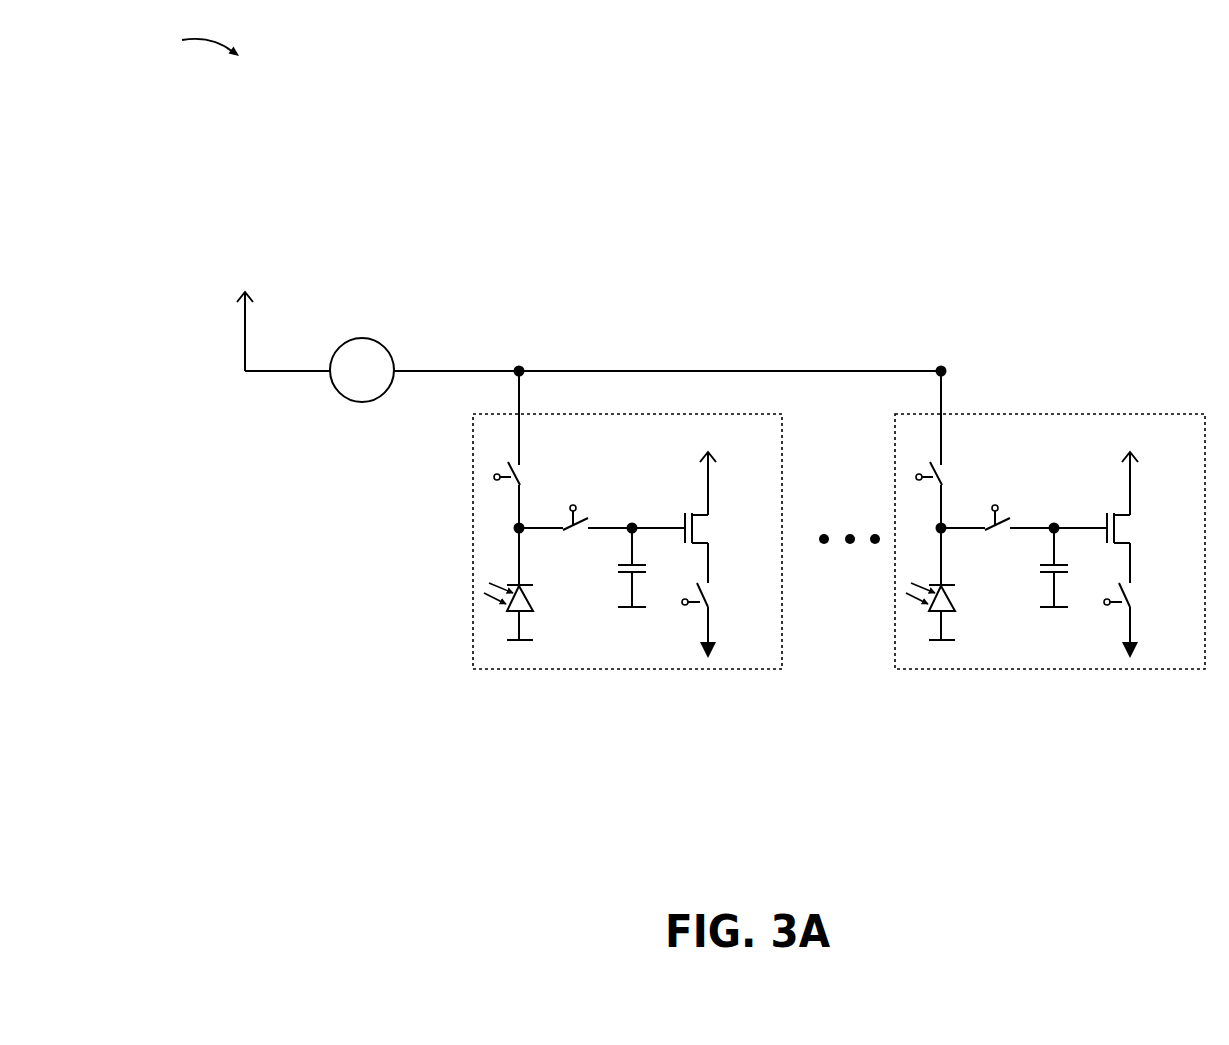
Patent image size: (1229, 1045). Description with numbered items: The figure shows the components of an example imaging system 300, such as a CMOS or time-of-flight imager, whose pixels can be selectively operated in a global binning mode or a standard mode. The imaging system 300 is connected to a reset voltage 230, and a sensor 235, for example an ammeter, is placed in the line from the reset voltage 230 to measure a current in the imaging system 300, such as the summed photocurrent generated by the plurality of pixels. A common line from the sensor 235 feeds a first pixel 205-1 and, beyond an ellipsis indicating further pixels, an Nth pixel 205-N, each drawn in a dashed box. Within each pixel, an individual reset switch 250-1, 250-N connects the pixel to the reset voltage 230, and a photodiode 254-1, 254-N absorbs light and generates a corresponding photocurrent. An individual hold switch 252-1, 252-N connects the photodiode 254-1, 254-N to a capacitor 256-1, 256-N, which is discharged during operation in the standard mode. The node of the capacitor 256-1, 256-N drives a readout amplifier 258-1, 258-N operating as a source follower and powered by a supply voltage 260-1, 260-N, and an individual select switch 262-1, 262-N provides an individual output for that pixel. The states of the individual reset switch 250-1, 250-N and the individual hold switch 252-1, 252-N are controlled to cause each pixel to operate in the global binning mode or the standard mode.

The imaging system 300 is at (184, 42).
The reset voltage 230 is at (273, 311).
The sensor 235 is at (362, 355).
The pixel 205-1 is at (627, 561).
The pixel 205-N is at (1050, 561).
The individual reset switch 250-1 is at (542, 449).
The individual reset switch 250-N is at (965, 449).
The individual hold switch 252-1 is at (575, 532).
The individual hold switch 252-N is at (997, 532).
The photodiode 254-1 is at (540, 584).
The photodiode 254-N is at (963, 584).
The capacitor 256-1 is at (605, 567).
The capacitor 256-N is at (1027, 567).
The readout amplifier 258-1 is at (704, 528).
The readout amplifier 258-N is at (1127, 528).
The supply voltage 260-1 is at (675, 467).
The supply voltage 260-N is at (1097, 467).
The individual select switch 262-1 is at (730, 600).
The individual select switch 262-N is at (1153, 600).